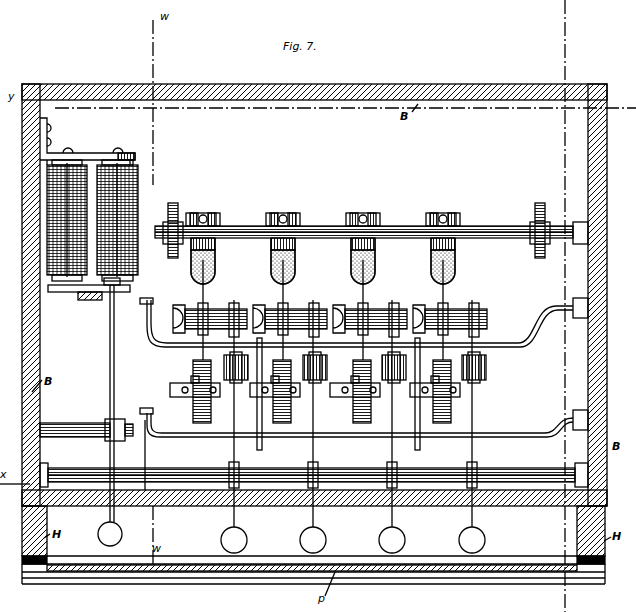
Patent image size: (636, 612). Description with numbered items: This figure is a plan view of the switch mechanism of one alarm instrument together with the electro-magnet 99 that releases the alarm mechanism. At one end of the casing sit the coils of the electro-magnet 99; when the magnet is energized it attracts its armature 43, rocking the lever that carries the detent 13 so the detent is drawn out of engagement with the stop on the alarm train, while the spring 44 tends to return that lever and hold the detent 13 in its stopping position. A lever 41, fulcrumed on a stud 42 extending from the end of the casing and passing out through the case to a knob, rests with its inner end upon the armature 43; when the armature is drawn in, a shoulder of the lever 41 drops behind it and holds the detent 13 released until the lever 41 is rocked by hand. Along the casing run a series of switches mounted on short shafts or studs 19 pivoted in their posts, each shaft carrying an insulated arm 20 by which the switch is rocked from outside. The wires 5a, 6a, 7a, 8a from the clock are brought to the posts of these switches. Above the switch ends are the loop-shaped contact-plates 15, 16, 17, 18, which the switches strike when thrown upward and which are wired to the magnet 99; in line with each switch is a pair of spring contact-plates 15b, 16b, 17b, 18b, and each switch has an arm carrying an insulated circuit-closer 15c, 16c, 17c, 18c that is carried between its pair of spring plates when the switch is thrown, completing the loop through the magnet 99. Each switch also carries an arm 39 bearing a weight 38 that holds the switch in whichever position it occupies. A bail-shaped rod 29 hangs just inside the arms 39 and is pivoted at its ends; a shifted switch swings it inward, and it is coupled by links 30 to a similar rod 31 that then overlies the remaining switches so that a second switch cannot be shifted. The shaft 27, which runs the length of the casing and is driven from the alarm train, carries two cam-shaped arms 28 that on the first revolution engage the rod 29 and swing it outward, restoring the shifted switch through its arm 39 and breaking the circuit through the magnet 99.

The electro-magnet 99 is at (136, 205).
The spring 44 is at (97, 293).
The detent 13 is at (80, 298).
The armature 43 is at (122, 281).
The lever 41 is at (115, 364).
The stud 42 is at (92, 424).
The cam-shaped arms 28 is at (222, 470).
The shaft 27 is at (512, 240).
The rod 29 is at (182, 348).
The rod 31 is at (193, 438).
The links 30 is at (260, 420).
The spring contact-plates 15b is at (205, 213).
The insulated circuit-closer 15c is at (216, 244).
The contact-plate 15 is at (192, 374).
The spring contact-plates 16b is at (285, 213).
The insulated circuit-closer 16c is at (296, 244).
The contact-plate 16 is at (292, 382).
The spring contact-plates 17b is at (365, 213).
The insulated circuit-closer 17c is at (376, 244).
The contact-plate 17 is at (372, 382).
The spring contact-plates 18b is at (445, 213).
The insulated circuit-closer 18c is at (456, 244).
The contact-plate 18 is at (452, 382).
The short shafts or studs 19 is at (214, 310).
The arms 20 is at (228, 336).
The weights 38 is at (195, 390).
The arms 39 is at (278, 377).
The wire 5a is at (236, 384).
The wire 6a is at (315, 384).
The wire 7a is at (394, 384).
The wire 8a is at (474, 384).